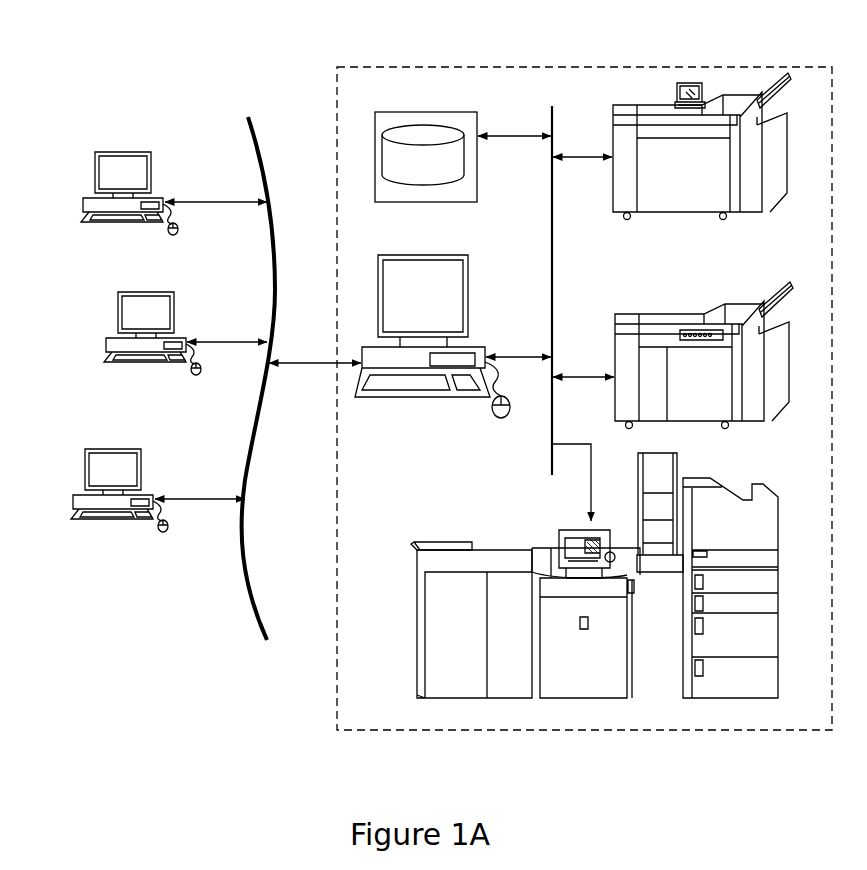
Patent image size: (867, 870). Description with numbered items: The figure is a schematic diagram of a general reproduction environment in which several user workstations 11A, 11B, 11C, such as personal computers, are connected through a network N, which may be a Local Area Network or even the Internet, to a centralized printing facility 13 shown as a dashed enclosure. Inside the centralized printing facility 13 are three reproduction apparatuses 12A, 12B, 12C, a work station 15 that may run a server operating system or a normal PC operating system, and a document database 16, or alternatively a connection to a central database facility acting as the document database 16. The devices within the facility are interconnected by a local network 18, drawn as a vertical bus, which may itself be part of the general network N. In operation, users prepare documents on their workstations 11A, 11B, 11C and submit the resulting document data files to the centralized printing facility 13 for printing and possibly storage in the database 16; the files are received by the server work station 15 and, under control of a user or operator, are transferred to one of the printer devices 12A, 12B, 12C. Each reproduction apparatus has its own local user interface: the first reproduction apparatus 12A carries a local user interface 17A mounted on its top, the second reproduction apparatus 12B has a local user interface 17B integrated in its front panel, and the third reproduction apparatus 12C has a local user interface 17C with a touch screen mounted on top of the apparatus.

The user workstation 11A is at (95, 172).
The user workstation 11B is at (118, 316).
The user workstation 11C is at (85, 468).
The network N is at (275, 235).
The centralized printing facility 13 is at (387, 66).
The work station 15 is at (468, 322).
The document database 16 is at (477, 190).
The local network 18 is at (551, 273).
The first reproduction apparatus 12A is at (692, 129).
The second reproduction apparatus 12B is at (692, 360).
The third reproduction apparatus 12C is at (594, 575).
The local user interface 17A is at (673, 84).
The local user interface 17B is at (692, 322).
The local user interface 17C is at (550, 540).